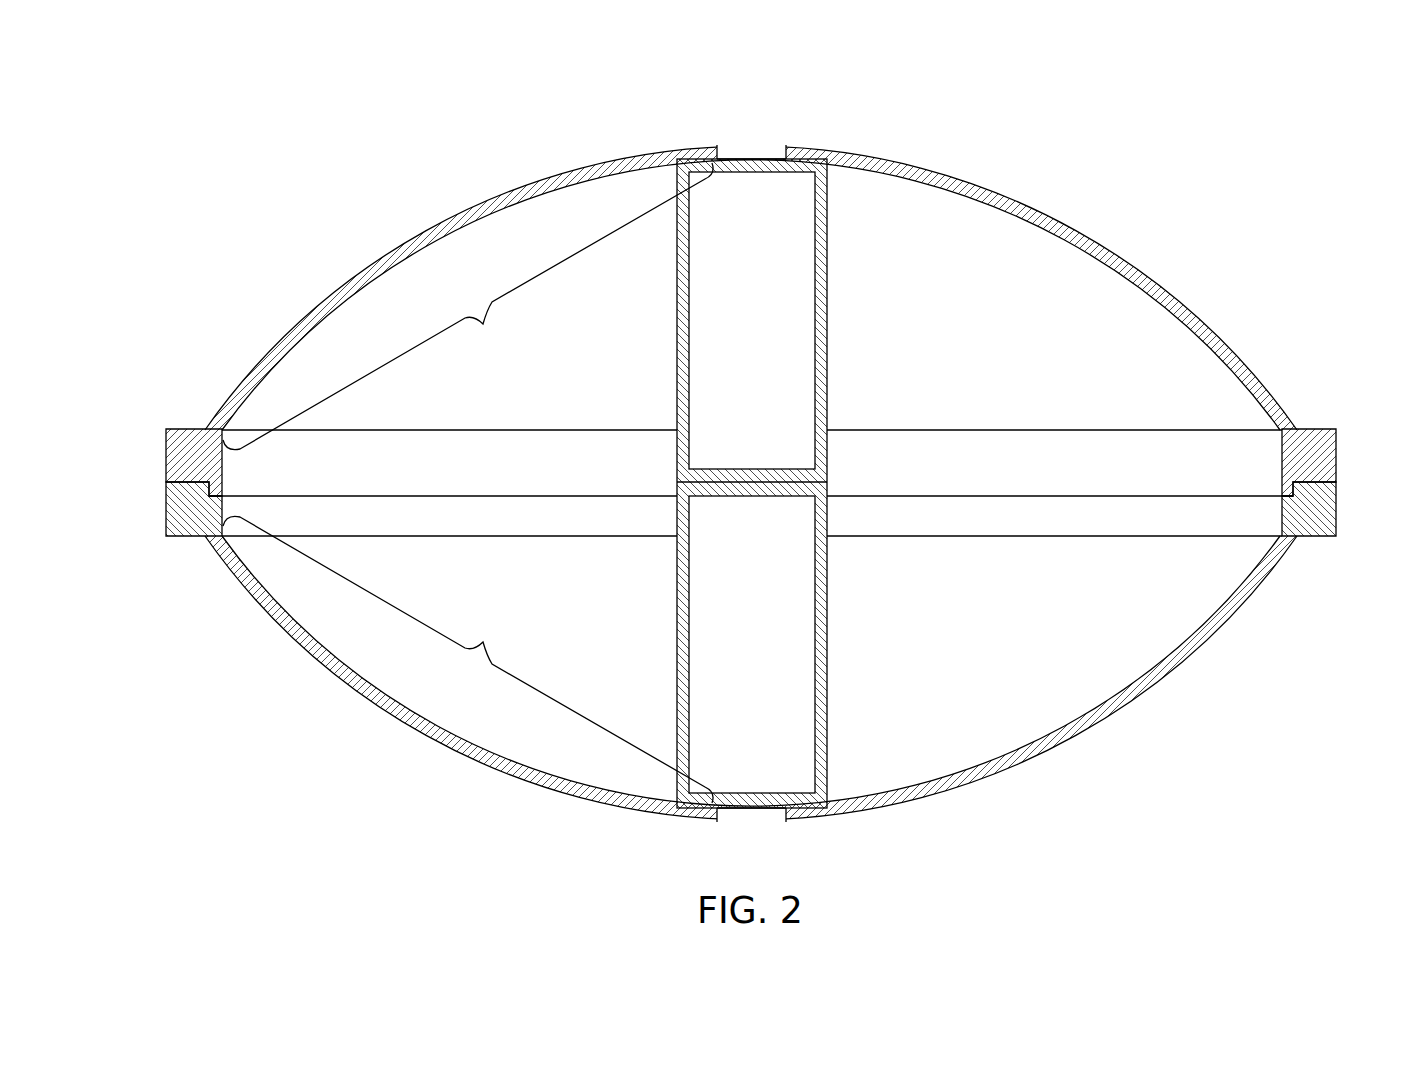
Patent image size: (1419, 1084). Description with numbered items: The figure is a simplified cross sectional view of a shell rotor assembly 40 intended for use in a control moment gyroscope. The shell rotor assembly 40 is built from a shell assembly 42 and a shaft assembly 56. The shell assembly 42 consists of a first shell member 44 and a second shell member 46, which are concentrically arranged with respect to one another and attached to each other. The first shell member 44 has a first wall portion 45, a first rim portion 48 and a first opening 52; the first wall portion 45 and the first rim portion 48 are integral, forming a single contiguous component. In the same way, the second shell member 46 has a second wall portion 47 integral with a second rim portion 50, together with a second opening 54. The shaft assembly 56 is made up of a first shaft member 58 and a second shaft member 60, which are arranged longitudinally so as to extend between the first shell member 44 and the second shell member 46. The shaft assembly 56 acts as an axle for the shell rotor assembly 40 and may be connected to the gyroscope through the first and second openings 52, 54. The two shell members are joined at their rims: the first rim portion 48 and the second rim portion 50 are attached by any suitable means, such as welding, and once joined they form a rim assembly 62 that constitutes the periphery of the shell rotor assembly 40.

The shell rotor assembly 40 is at (752, 478).
The shell assembly 42 is at (751, 483).
The first shell member 44 is at (751, 262).
The first wall portion 45 is at (468, 306).
The second shell member 46 is at (751, 703).
The second wall portion 47 is at (468, 659).
The first rim portion 48 is at (165, 429).
The second rim portion 50 is at (165, 482).
The first opening 52 is at (763, 144).
The second opening 54 is at (760, 823).
The shaft assembly 56 is at (803, 483).
The first shaft member 58 is at (827, 408).
The second shaft member 60 is at (827, 641).
The rim assembly 62 is at (1340, 429).